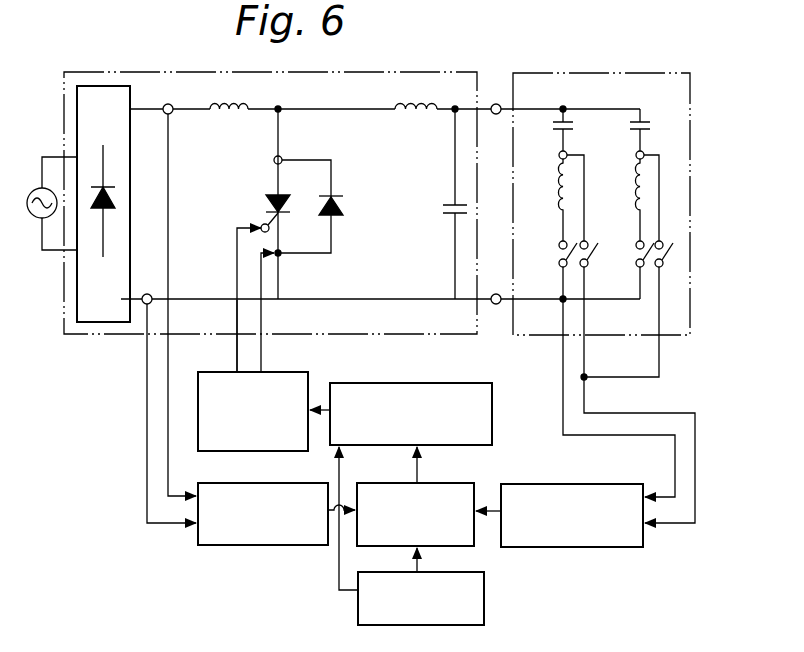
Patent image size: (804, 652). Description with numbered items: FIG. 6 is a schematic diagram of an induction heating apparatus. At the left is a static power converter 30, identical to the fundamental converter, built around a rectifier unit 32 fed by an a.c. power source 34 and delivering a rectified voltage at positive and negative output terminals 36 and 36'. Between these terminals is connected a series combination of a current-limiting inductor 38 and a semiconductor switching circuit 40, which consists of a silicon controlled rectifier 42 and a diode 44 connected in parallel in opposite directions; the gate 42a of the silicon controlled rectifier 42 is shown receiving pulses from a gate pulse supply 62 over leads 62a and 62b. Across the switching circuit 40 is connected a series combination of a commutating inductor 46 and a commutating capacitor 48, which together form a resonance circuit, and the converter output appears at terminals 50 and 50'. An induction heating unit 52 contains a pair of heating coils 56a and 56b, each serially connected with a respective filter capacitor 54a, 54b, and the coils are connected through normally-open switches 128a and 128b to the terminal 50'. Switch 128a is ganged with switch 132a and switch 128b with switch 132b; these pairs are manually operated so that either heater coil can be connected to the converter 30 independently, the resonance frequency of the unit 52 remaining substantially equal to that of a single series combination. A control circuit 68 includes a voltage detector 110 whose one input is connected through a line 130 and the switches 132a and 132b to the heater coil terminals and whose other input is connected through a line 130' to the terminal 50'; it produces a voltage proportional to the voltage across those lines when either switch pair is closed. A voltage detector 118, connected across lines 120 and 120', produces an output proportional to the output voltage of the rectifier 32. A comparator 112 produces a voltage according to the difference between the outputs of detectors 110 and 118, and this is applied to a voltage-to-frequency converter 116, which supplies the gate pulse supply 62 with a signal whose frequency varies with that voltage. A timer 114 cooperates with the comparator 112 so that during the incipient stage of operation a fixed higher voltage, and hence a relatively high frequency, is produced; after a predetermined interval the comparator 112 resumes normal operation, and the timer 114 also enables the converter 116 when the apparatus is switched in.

The static power converter 30 is at (141, 70).
The rectifier unit 32 is at (131, 204).
The a.c. power source 34 is at (46, 156).
The positive output terminal 36 is at (165, 300).
The negative output terminal 36' is at (181, 384).
The current-limiting inductor 38 is at (227, 112).
The semiconductor switching circuit 40 is at (308, 204).
The silicon controlled rectifier 42 is at (267, 204).
The gate of thyristor 42a is at (238, 229).
The diode 44 is at (343, 204).
The commutating inductor 46 is at (412, 114).
The commutating capacitor 48 is at (445, 215).
The terminal 50 is at (499, 77).
The terminal 50' is at (493, 332).
The induction heating unit 52 is at (627, 71).
The filter capacitor 54a is at (558, 118).
The filter capacitor 54b is at (640, 118).
The heating coil 56a is at (556, 187).
The heating coil 56b is at (628, 187).
The gate pulse supply 62 is at (262, 369).
The gate pulse supply lead 62a is at (236, 320).
The gate pulse supply lead 62b is at (264, 320).
The control circuit 68 is at (506, 456).
The voltage detector 110 is at (565, 547).
The comparator 112 is at (440, 483).
The timer 114 is at (484, 588).
The voltage-to-frequency converter 116 is at (406, 382).
The voltage detector 118 is at (268, 482).
The line 120 is at (132, 418).
The line 120' is at (125, 451).
The normally-open switch 128a is at (557, 251).
The normally-open switch 128b is at (634, 251).
The line 130 is at (666, 396).
The line 130' is at (653, 457).
The normally-open switch 132a is at (590, 254).
The normally-open switch 132b is at (668, 258).